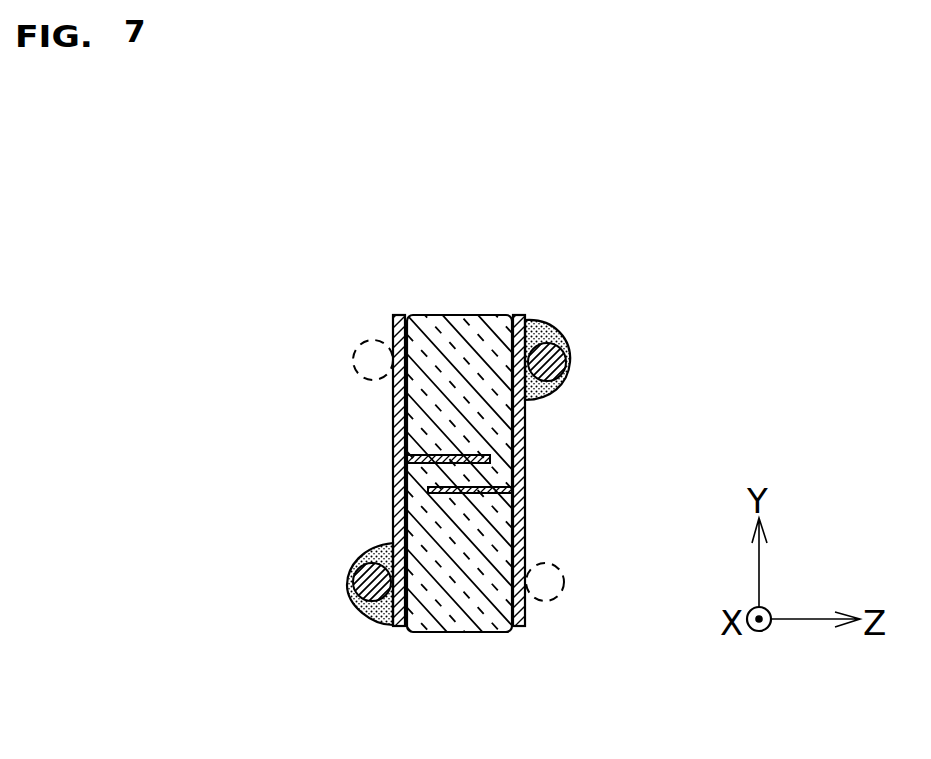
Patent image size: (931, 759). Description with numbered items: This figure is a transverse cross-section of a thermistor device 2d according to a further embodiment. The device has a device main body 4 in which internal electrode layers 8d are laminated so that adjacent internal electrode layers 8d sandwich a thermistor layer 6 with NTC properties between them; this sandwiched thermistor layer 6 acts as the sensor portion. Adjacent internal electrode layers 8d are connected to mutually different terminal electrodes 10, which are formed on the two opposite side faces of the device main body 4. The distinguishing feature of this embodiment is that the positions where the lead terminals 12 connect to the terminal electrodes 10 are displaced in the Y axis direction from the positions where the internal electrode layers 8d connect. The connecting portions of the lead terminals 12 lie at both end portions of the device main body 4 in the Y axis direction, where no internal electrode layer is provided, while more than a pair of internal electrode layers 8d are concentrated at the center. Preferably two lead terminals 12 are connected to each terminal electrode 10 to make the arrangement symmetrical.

The thermistor device 2d is at (429, 459).
The device main body 4 is at (459, 611).
The thermistor layer 6 is at (487, 467).
The internal electrode layer 8d is at (467, 453).
The terminal electrode 10 is at (395, 504).
The lead terminal 12 is at (373, 340).